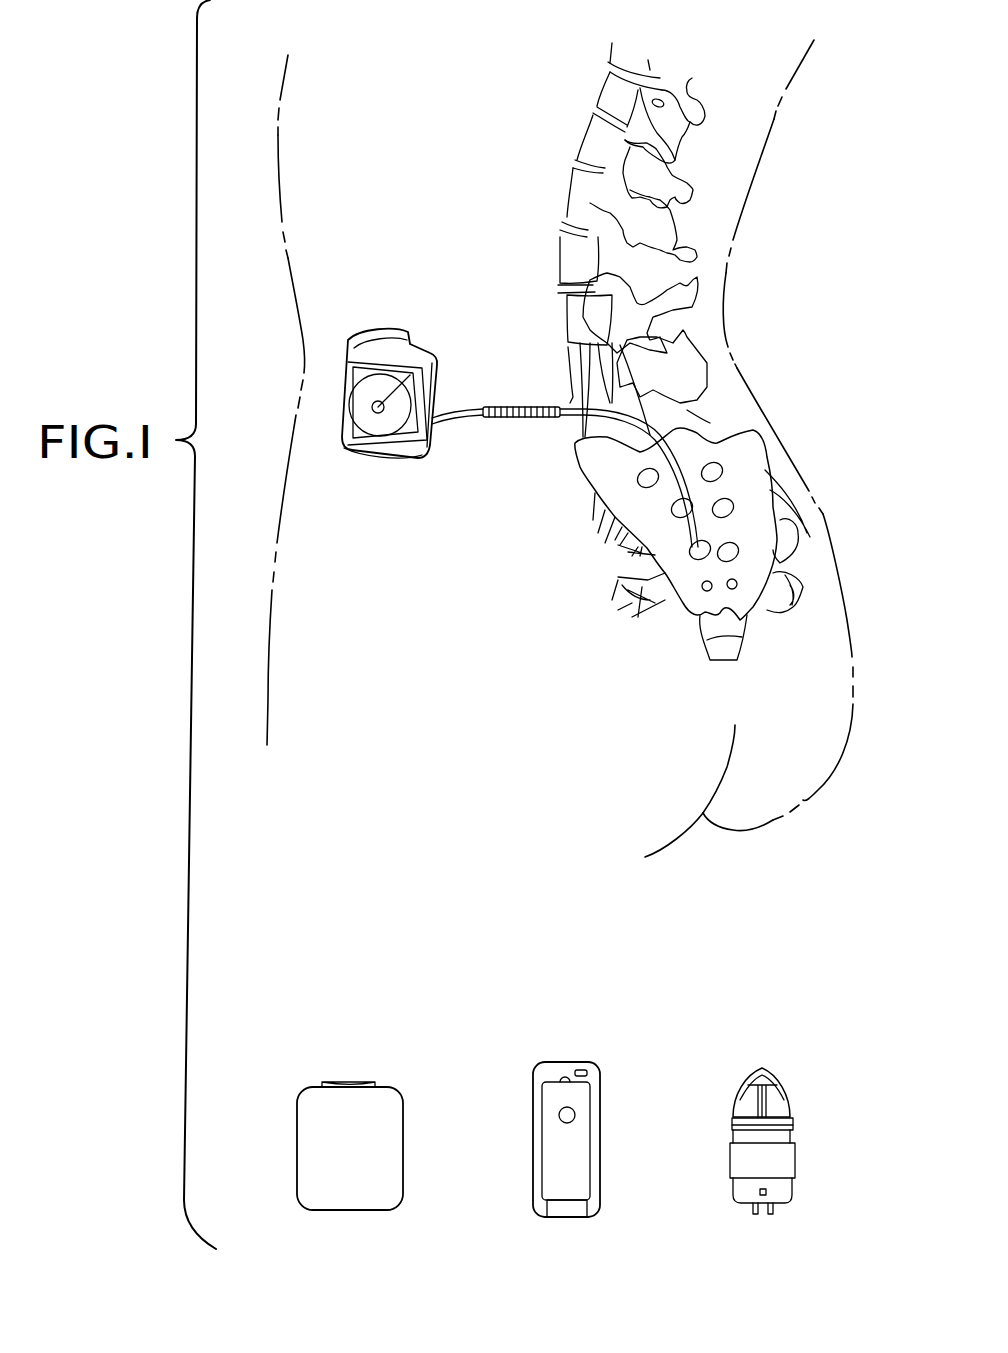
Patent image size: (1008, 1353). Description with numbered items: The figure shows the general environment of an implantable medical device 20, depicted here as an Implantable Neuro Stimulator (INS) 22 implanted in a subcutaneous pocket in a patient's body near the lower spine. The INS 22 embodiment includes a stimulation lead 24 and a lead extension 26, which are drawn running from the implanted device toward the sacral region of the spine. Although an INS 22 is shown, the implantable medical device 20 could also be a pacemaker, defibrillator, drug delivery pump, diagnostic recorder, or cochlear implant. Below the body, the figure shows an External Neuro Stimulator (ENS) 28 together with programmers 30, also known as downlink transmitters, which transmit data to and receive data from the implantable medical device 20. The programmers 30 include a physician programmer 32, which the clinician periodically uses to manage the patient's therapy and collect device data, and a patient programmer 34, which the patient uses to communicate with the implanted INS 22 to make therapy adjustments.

The implantable medical device 20 is at (392, 270).
The Implantable Neuro Stimulator (INS) 22 is at (377, 461).
The stimulation lead 24 is at (577, 406).
The lead extension 26 is at (485, 415).
The External Neuro Stimulator (ENS) 28 is at (350, 1212).
The programmers 30 is at (719, 1061).
The physician programmer 32 is at (570, 1220).
The patient programmer 34 is at (763, 1212).